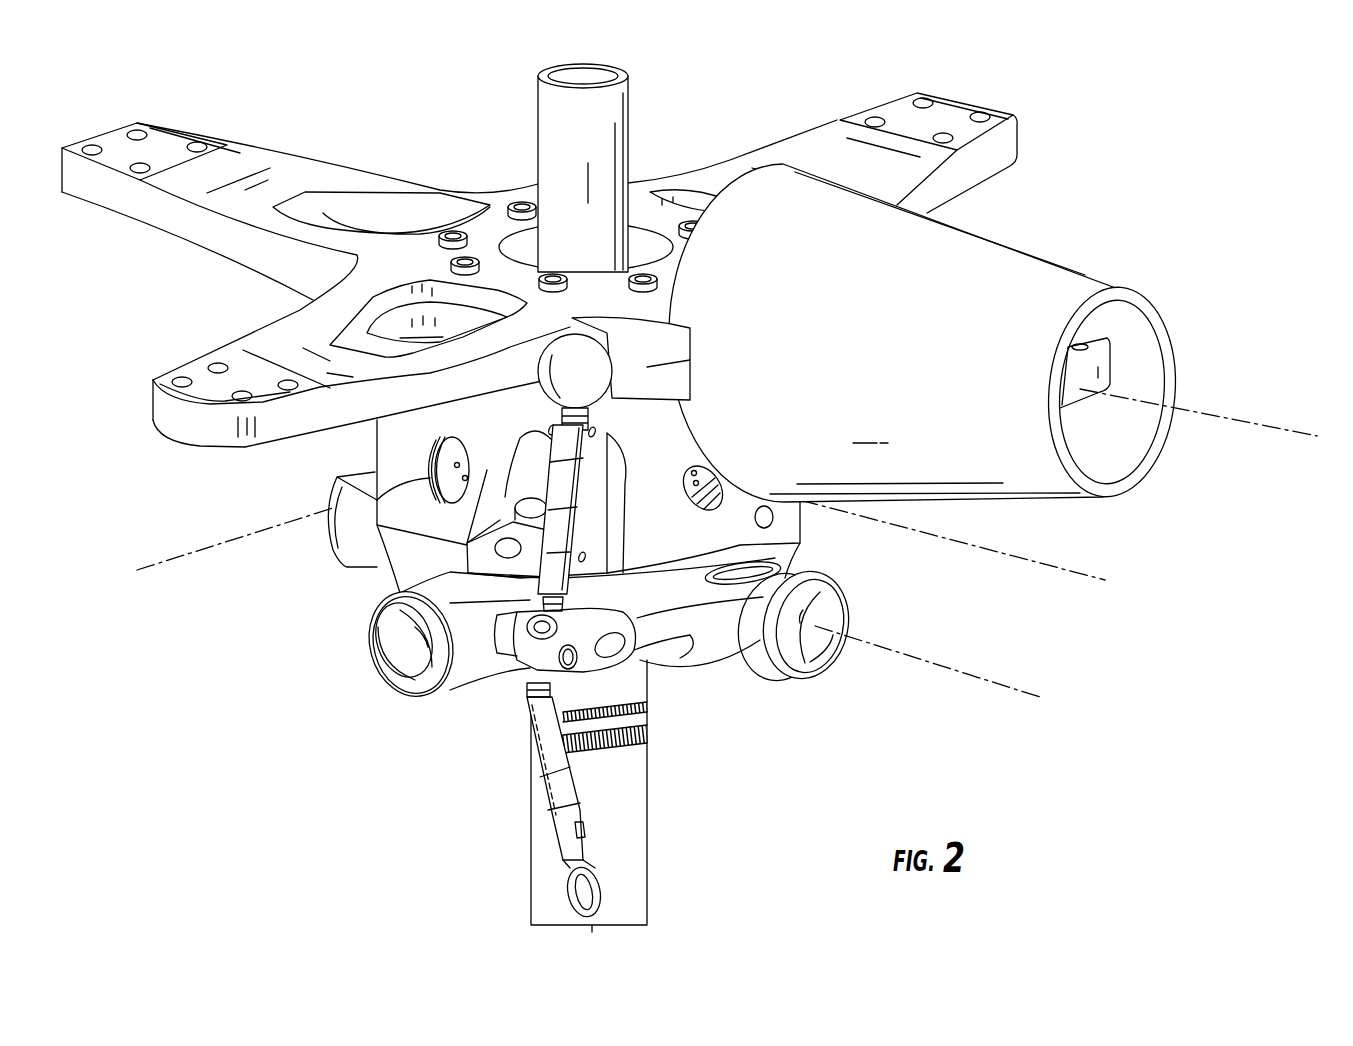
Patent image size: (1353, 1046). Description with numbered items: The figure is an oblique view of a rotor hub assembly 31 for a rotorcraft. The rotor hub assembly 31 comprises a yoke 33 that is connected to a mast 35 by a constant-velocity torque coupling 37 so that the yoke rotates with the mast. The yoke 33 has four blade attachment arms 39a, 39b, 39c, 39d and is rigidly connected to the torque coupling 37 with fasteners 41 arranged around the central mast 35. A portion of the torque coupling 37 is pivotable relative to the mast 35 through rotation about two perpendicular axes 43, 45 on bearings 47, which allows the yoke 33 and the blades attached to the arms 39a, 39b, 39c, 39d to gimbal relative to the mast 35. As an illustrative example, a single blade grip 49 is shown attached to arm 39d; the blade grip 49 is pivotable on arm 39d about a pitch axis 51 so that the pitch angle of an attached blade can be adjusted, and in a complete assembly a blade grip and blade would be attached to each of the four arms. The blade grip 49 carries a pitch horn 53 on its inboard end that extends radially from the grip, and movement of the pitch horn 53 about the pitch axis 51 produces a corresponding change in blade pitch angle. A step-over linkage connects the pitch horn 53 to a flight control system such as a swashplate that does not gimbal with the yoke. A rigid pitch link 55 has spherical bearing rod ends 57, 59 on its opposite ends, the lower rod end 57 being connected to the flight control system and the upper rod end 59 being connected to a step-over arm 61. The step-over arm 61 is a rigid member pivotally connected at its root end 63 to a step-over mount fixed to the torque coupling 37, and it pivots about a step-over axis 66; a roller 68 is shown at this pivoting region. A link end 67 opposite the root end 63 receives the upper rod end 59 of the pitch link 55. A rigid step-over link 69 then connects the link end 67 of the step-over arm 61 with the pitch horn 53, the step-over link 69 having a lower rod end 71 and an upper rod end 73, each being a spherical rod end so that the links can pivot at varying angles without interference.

The rotor hub assembly 31 is at (539, 255).
The yoke 33 is at (539, 255).
The mast 35 is at (630, 112).
The constant-velocity torque coupling 37 is at (738, 525).
The blade attachment arm 39a is at (280, 345).
The blade attachment arm 39b is at (252, 172).
The blade attachment arm 39c is at (827, 160).
The blade attachment arm 39d is at (1100, 380).
The fastener nuts 41 is at (520, 203).
The pivot axis 43 is at (180, 560).
The pivot axis 45 is at (1053, 567).
The bearings 47 is at (335, 540).
The blade grip 49 is at (1035, 290).
The pitch axis 51 is at (1245, 423).
The pitch horn 53 is at (688, 350).
The pitch link 55 is at (563, 803).
The lower rod end 57 is at (593, 897).
The upper rod end 59 is at (522, 672).
The step-over arm 61 is at (649, 642).
The root end 63 is at (753, 650).
The step-over axis 66 is at (940, 673).
The link end 67 is at (478, 688).
The second roller 68 is at (827, 610).
The step-over link 69 is at (555, 533).
The lower rod end 71 is at (673, 623).
The upper rod end 73 is at (600, 412).